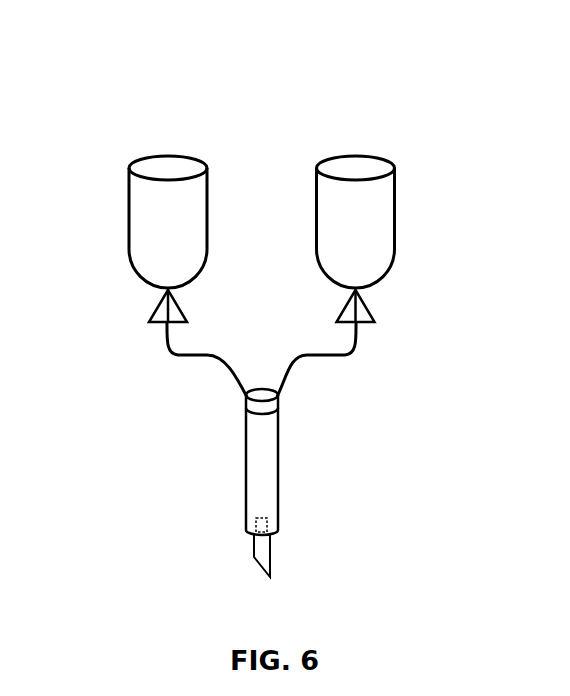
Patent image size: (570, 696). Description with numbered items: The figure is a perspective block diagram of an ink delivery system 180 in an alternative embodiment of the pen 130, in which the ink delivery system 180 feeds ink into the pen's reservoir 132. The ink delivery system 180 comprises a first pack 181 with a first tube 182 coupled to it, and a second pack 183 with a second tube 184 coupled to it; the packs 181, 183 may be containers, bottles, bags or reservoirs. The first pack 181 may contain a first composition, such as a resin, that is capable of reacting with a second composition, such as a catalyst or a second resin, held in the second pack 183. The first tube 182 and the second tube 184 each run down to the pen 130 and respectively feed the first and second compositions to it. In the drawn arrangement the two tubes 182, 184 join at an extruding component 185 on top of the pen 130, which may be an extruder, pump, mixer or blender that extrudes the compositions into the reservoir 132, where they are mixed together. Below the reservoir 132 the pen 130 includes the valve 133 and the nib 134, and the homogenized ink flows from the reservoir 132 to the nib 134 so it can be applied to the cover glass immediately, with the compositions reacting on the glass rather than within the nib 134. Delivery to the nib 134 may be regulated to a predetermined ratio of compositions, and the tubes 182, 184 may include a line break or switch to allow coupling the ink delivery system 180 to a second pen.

The ink delivery system 180 is at (140, 72).
The first pack 181 is at (394, 212).
The first tube 182 is at (356, 357).
The second pack 183 is at (129, 218).
The second tube 184 is at (166, 357).
The extruding component 185 is at (260, 388).
The pen 130 is at (256, 455).
The reservoir 132 is at (278, 477).
The valve 133 is at (256, 520).
The nib 134 is at (271, 574).